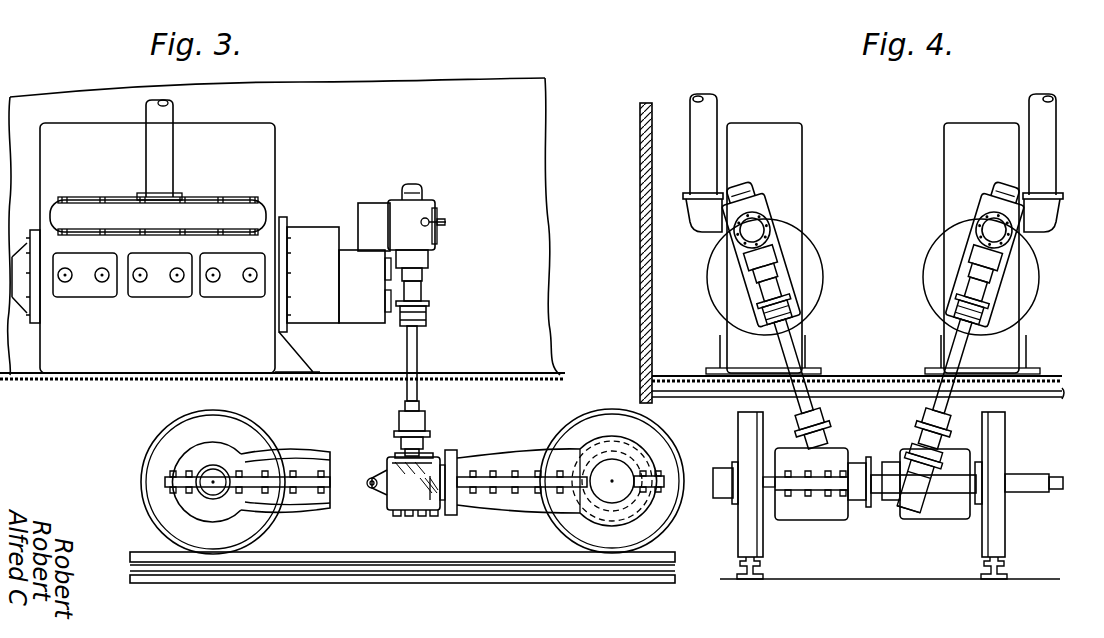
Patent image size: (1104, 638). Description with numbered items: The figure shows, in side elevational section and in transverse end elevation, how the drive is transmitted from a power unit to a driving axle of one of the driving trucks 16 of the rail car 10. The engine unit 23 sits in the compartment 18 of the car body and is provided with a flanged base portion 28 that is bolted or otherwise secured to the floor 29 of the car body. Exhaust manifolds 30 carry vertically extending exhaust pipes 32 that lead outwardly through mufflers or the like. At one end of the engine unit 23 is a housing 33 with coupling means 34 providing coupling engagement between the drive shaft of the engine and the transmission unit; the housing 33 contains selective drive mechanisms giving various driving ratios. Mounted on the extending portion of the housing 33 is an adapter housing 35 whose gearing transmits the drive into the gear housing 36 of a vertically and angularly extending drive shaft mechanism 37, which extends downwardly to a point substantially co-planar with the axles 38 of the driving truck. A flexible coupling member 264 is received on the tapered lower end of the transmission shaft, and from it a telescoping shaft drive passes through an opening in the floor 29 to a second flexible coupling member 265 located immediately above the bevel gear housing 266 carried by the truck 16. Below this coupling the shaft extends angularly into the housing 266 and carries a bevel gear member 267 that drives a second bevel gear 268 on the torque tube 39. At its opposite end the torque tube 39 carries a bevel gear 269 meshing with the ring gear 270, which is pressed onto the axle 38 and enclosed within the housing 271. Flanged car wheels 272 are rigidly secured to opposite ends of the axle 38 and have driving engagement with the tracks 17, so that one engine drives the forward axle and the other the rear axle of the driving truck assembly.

In FIG. 3, the car body 10 is at (552, 318).
In FIG. 3, the driving truck 16 is at (447, 521).
In FIG. 4, the driving truck 16 is at (865, 530).
In FIG. 3, the tracks 17 is at (305, 575).
In FIG. 4, the tracks 17 is at (746, 581).
In FIG. 3, the compartment 18 is at (343, 79).
In FIG. 3, the engine unit 23 is at (91, 130).
In FIG. 4, the engine unit 23 is at (771, 130).
In FIG. 3, the flanged base portion 28 is at (287, 357).
In FIG. 4, the flanged base portion 28 is at (730, 340).
In FIG. 3, the floor 29 is at (350, 382).
In FIG. 4, the floor 29 is at (683, 378).
In FIG. 3, the exhaust manifold 30 is at (204, 205).
In FIG. 4, the exhaust manifold 30 is at (700, 222).
In FIG. 3, the exhaust pipe 32 is at (165, 120).
In FIG. 4, the exhaust pipe 32 is at (692, 104).
In FIG. 3, the housing 33 is at (313, 240).
In FIG. 4, the housing 33 is at (812, 252).
In FIG. 3, the coupling means 34 is at (284, 218).
In FIG. 3, the adapter housing 35 is at (369, 212).
In FIG. 3, the gear housing 36 is at (428, 205).
In FIG. 4, the gear housing 36 is at (768, 205).
In FIG. 3, the drive shaft mechanism 37 is at (417, 368).
In FIG. 4, the drive shaft mechanism 37 is at (788, 352).
In FIG. 3, the axle 38 is at (207, 468).
In FIG. 4, the axle 38 is at (722, 498).
In FIG. 3, the torque tube 39 is at (497, 475).
In FIG. 3, the flexible coupling member 264 is at (432, 312).
In FIG. 4, the flexible coupling member 264 is at (780, 310).
In FIG. 3, the flexible coupling member 265 is at (428, 426).
In FIG. 4, the flexible coupling member 265 is at (927, 420).
In FIG. 3, the bevel gear housing 266 is at (388, 498).
In FIG. 4, the bevel gear housing 266 is at (950, 503).
In FIG. 3, the bevel gear member 267 is at (386, 459).
In FIG. 3, the second bevel gear 268 is at (421, 517).
In FIG. 3, the bevel gear 269 is at (588, 445).
In FIG. 3, the ring gear 270 is at (585, 517).
In FIG. 3, the housing 271 is at (185, 465).
In FIG. 4, the housing 271 is at (815, 510).
In FIG. 3, the flanged car wheel 272 is at (155, 517).
In FIG. 4, the flanged car wheel 272 is at (745, 535).